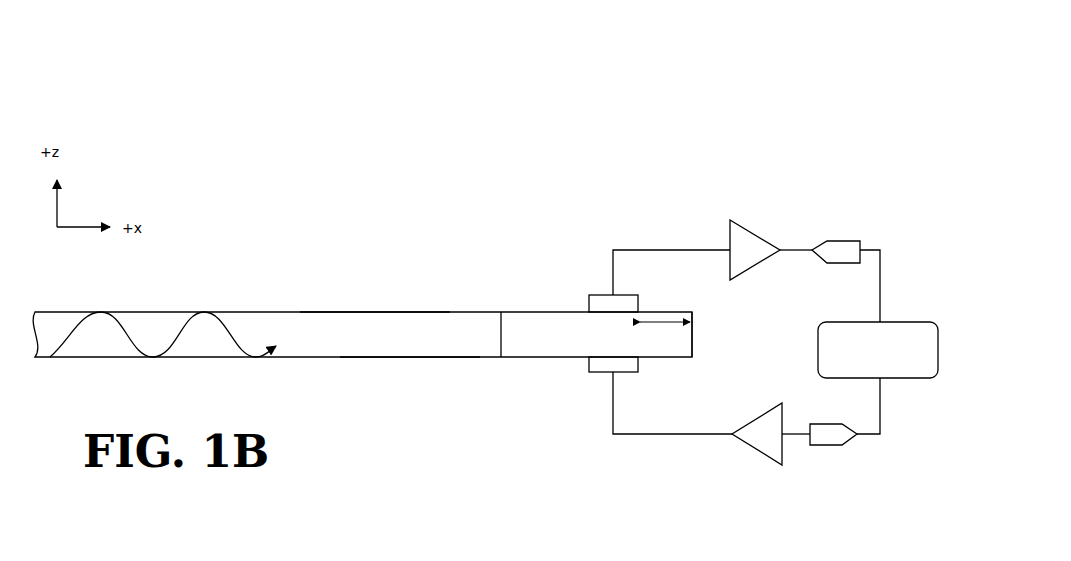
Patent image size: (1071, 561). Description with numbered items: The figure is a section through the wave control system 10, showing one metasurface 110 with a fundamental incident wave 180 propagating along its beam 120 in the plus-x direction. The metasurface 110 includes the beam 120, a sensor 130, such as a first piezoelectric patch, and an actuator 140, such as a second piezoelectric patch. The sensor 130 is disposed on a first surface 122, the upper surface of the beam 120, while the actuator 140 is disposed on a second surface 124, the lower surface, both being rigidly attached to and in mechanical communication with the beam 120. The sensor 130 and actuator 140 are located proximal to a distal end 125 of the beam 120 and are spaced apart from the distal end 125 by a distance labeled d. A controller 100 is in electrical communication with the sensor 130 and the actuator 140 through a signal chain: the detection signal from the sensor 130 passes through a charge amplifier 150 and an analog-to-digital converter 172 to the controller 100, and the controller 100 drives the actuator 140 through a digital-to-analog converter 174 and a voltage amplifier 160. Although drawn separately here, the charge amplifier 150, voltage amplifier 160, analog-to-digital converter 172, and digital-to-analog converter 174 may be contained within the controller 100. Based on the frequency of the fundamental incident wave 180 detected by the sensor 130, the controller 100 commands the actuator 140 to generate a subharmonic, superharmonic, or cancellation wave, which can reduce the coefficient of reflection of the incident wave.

The wave control system 10 is at (790, 143).
The controller 100 is at (878, 350).
The metasurface 110 is at (494, 216).
The beam 120 is at (440, 306).
The first surface 122 is at (373, 312).
The second surface 124 is at (410, 357).
The distal end 125 is at (692, 333).
The sensor 130 is at (598, 295).
The actuator 140 is at (598, 372).
The charge amplifier 150 is at (753, 232).
The voltage amplifier 160 is at (762, 452).
The analog-to-digital converter 172 is at (842, 241).
The digital-to-analog converter 174 is at (823, 445).
The fundamental incident wave 180 is at (178, 329).